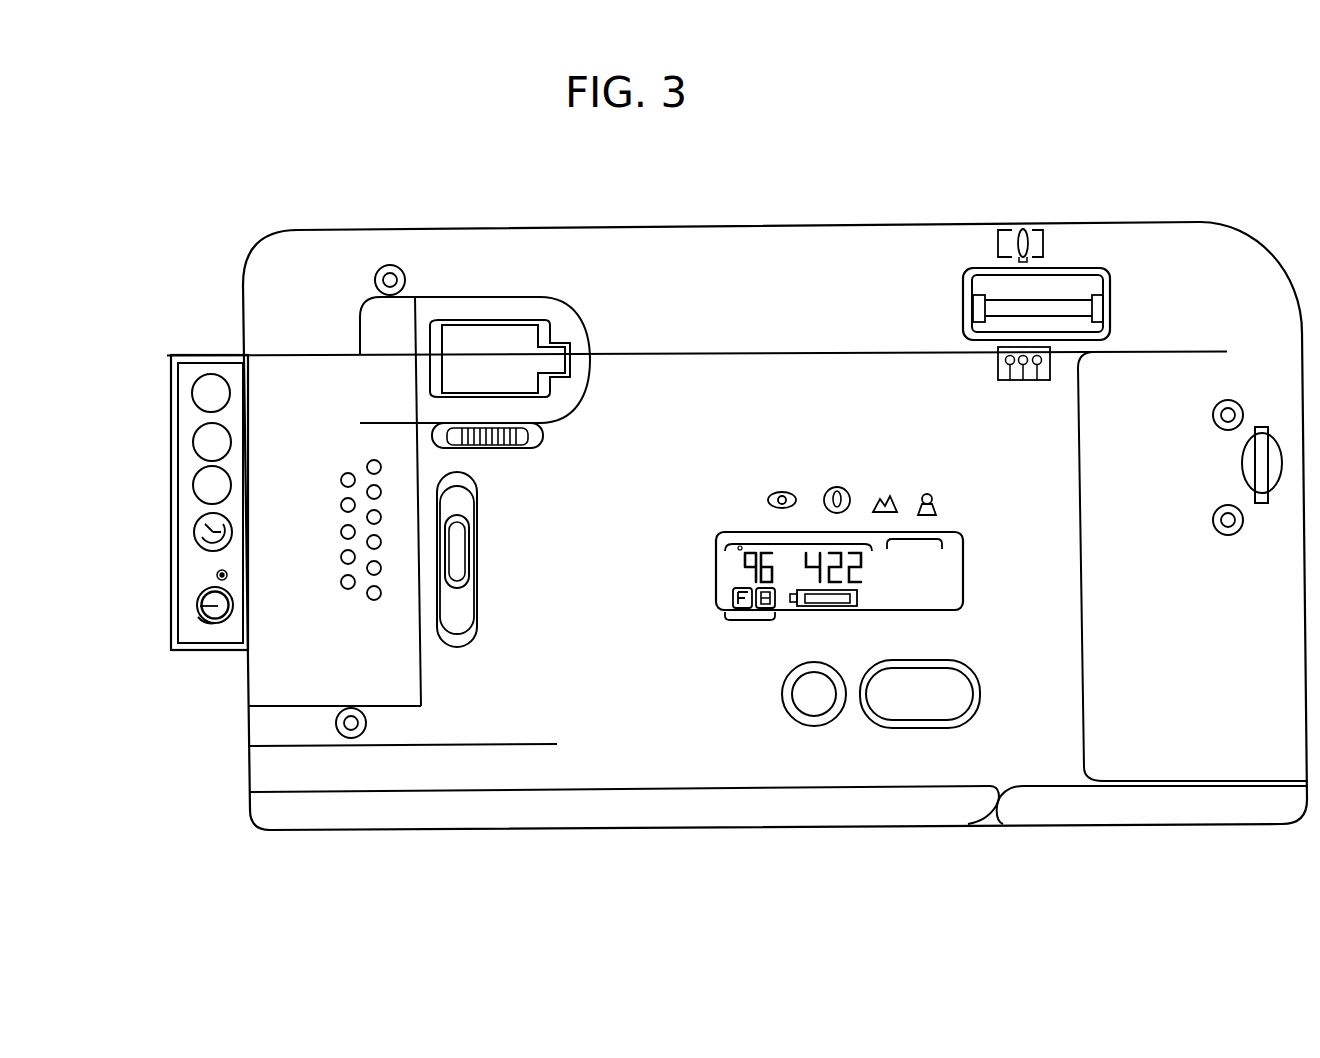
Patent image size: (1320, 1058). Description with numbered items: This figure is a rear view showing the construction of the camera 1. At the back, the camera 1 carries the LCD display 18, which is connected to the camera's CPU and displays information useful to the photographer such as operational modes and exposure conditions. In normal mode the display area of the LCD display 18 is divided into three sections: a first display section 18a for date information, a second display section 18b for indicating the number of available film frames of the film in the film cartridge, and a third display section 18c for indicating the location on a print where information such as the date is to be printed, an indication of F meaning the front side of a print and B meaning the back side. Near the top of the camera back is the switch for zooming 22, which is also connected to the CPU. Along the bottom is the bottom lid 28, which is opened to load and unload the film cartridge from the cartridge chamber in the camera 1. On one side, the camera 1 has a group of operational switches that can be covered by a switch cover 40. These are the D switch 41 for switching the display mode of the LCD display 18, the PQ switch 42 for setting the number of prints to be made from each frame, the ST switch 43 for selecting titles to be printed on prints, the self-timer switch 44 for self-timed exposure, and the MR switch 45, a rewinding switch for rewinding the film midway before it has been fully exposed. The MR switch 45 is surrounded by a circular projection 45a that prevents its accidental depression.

The camera 1 is at (852, 211).
The LCD display 18 is at (963, 562).
The first display section 18a is at (797, 546).
The second display section 18b is at (916, 546).
The third display section 18c is at (750, 620).
The switch for zooming 22 is at (1058, 295).
The bottom lid 28 is at (1118, 807).
The switch cover 40 is at (190, 652).
The D switch 41 is at (192, 395).
The PQ switch 42 is at (192, 442).
The ST switch 43 is at (192, 486).
The self-timer switch 44 is at (194, 533).
The MR switch 45 is at (198, 600).
The circular projection 45a is at (193, 620).